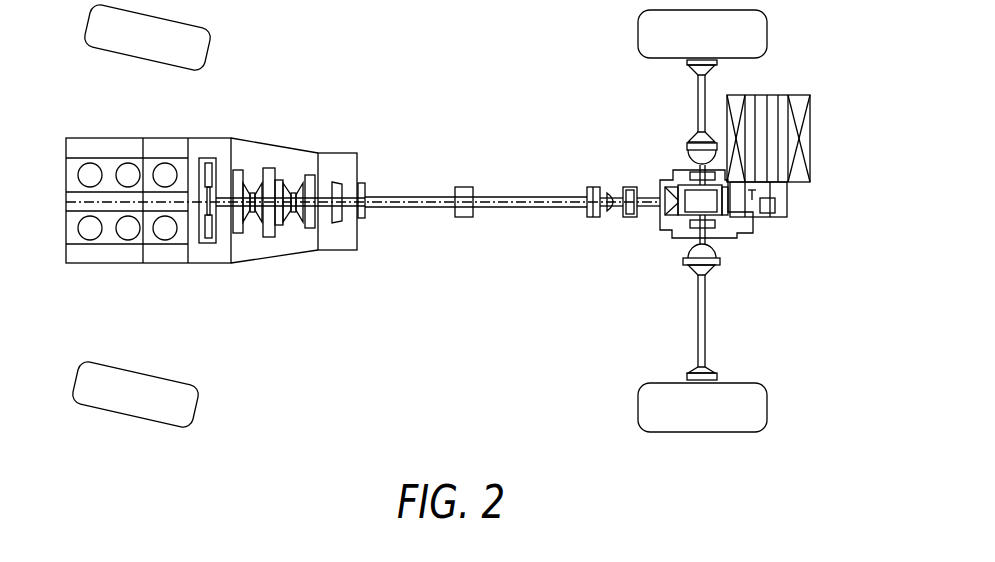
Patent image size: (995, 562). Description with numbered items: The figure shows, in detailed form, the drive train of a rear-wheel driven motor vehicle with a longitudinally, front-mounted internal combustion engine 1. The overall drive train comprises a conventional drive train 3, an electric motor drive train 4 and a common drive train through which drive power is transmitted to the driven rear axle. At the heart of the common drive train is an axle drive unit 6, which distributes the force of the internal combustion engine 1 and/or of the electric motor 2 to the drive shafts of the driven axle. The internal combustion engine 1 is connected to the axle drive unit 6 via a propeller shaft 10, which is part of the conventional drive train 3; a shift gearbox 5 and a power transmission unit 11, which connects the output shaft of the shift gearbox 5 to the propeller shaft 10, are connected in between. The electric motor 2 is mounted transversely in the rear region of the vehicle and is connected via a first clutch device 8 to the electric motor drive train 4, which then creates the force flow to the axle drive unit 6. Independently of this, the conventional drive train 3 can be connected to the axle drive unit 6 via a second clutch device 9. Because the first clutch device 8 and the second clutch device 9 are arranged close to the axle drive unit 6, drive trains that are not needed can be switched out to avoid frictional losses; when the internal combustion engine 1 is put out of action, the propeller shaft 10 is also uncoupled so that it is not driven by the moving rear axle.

The internal combustion engine 1 is at (176, 147).
The electric motor 2 is at (800, 100).
The conventional drive train 3 is at (515, 179).
The electric motor drive train 4 is at (747, 246).
The shift gearbox 5 is at (252, 245).
The axle drive unit 6 is at (698, 197).
The first clutch device 8 is at (776, 203).
The second clutch device 9 is at (623, 218).
The propeller shaft 10 is at (413, 198).
The power transmission unit 11 is at (340, 248).